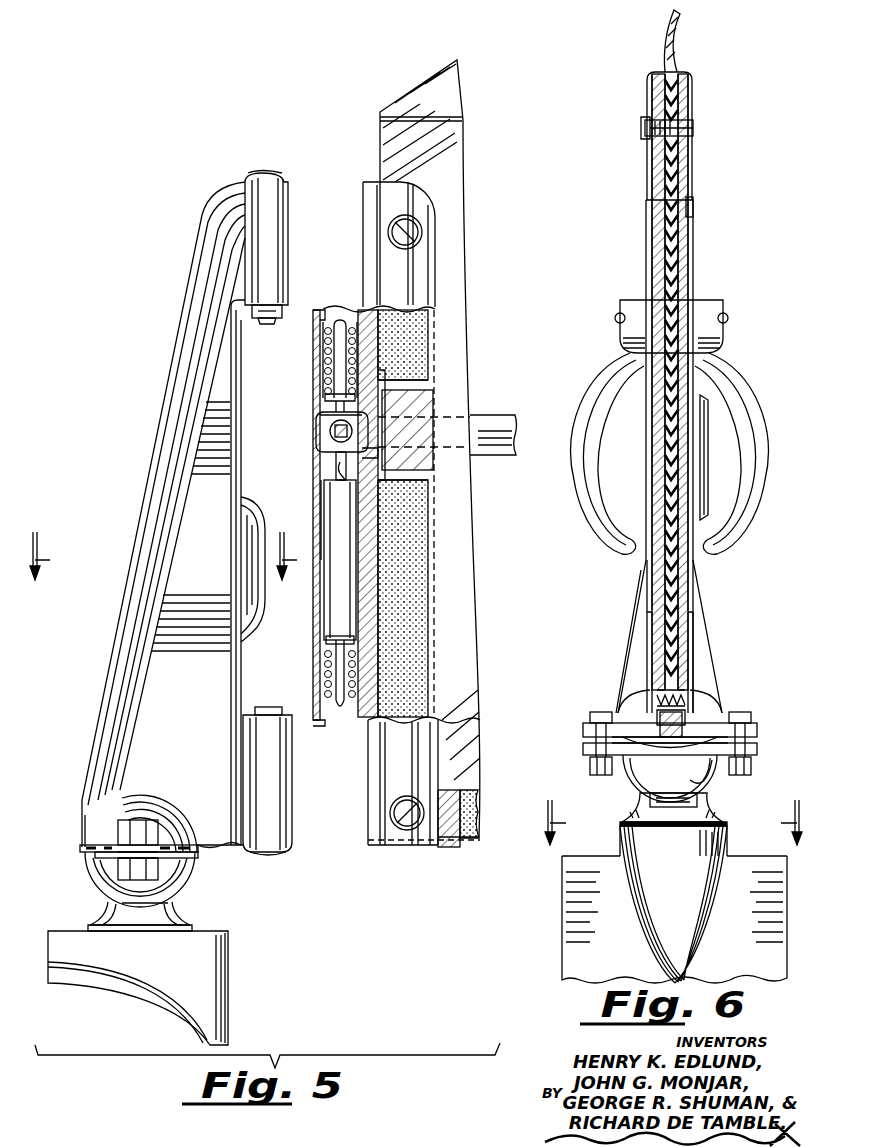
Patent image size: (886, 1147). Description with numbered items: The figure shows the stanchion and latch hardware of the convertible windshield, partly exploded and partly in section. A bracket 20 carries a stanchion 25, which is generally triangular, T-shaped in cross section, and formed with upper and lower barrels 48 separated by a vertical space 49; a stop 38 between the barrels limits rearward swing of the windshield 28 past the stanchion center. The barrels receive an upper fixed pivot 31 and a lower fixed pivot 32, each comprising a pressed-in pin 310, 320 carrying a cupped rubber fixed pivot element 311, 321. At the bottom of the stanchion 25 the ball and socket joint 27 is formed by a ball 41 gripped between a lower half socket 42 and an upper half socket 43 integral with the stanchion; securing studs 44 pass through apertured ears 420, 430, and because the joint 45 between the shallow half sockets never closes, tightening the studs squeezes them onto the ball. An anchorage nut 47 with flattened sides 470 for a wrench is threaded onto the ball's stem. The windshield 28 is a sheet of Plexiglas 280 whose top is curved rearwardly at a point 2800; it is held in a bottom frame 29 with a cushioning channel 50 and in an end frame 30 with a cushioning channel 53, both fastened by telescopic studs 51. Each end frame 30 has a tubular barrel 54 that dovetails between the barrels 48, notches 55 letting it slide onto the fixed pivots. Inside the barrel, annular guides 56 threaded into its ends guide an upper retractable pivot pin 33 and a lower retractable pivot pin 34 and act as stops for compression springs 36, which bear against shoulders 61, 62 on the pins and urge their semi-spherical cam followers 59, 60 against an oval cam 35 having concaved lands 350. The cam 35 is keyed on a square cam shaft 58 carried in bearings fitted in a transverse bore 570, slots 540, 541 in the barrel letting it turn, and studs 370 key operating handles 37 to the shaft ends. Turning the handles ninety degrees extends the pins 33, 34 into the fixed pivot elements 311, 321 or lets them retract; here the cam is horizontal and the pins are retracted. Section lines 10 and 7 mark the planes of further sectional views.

In FIG. 5, the bracket 20 is at (215, 1000).
In FIG. 6, the bracket 20 is at (563, 930).
In FIG. 5, the stanchion 25 is at (168, 440).
In FIG. 6, the stanchion 25 is at (712, 656).
In FIG. 5, the ball and socket joint 27 is at (95, 820).
In FIG. 6, the ball and socket joint 27 is at (706, 779).
In FIG. 5, the windshield 28 is at (500, 130).
In FIG. 6, the windshield 28 is at (700, 43).
In FIG. 5, the Plexiglas sheet 280 is at (465, 613).
In FIG. 6, the Plexiglas sheet 280 is at (686, 276).
In FIG. 6, the curve point 2800 is at (666, 22).
In FIG. 5, the bottom frame 29 is at (446, 849).
In FIG. 6, the bottom frame 29 is at (663, 688).
In FIG. 5, the end frame 30 is at (418, 196).
In FIG. 6, the end frame 30 is at (692, 632).
In FIG. 5, the upper fixed pivot 31 is at (286, 312).
In FIG. 5, the pin 310 is at (272, 176).
In FIG. 5, the cupped fixed pivot element 311 is at (262, 321).
In FIG. 5, the lower fixed pivot 32 is at (244, 716).
In FIG. 5, the pin 320 is at (274, 855).
In FIG. 5, the cupped fixed pivot element 321 is at (260, 709).
In FIG. 5, the upper retractable pivot pin 33 is at (338, 362).
In FIG. 5, the lower retractable pivot pin 34 is at (346, 569).
In FIG. 5, the cam 35 is at (328, 414).
In FIG. 5, the lands 350 is at (318, 432).
In FIG. 5, the compression springs 36 is at (324, 346).
In FIG. 5, the operating handles 37 is at (490, 422).
In FIG. 6, the operating handles 37 is at (760, 472).
In FIG. 6, the studs 370 is at (616, 320).
In FIG. 5, the stop 38 is at (250, 516).
In FIG. 6, the stop 38 is at (708, 450).
In FIG. 5, the ball 41 is at (122, 858).
In FIG. 6, the ball 41 is at (640, 746).
In FIG. 5, the lower half socket 42 is at (192, 886).
In FIG. 6, the lower half socket 42 is at (632, 778).
In FIG. 5, the apertured ears 420 is at (125, 862).
In FIG. 6, the apertured ears 420 is at (585, 750).
In FIG. 5, the upper half socket 43 is at (150, 803).
In FIG. 6, the upper half socket 43 is at (648, 700).
In FIG. 5, the apertured ears 430 is at (118, 836).
In FIG. 6, the apertured ears 430 is at (585, 732).
In FIG. 5, the securing studs 44 is at (155, 826).
In FIG. 6, the securing studs 44 is at (742, 712).
In FIG. 5, the joint 45 is at (197, 850).
In FIG. 6, the joint 45 is at (583, 745).
In FIG. 5, the anchorage nut 47 is at (147, 920).
In FIG. 6, the anchorage nut 47 is at (640, 812).
In FIG. 5, the flattened sides 470 is at (106, 908).
In FIG. 6, the flattened sides 470 is at (708, 801).
In FIG. 5, the upper and lower barrels 48 is at (292, 236).
In FIG. 6, the upper and lower barrels 48 is at (694, 174).
In FIG. 5, the vertical space 49 is at (231, 657).
In FIG. 5, the cushioning channel 50 is at (470, 840).
In FIG. 6, the cushioning channel 50 is at (690, 686).
In FIG. 5, the telescopic studs 51 is at (412, 230).
In FIG. 6, the telescopic studs 51 is at (695, 128).
In FIG. 6, the cushioning channel 53 is at (681, 234).
In FIG. 5, the tubular barrel 54 is at (316, 528).
In FIG. 6, the tubular barrel 54 is at (704, 300).
In FIG. 5, the slot 540 is at (388, 393).
In FIG. 5, the slot 541 is at (316, 428).
In FIG. 5, the notches 55 is at (322, 316).
In FIG. 6, the notches 55 is at (690, 210).
In FIG. 5, the annular guides 56 is at (373, 338).
In FIG. 5, the transverse bore 570 is at (377, 456).
In FIG. 5, the square cam shaft 58 is at (322, 444).
In FIG. 5, the cam follower 59 is at (334, 406).
In FIG. 5, the cam follower 60 is at (344, 458).
In FIG. 5, the shoulder 61 is at (378, 385).
In FIG. 5, the shoulder 62 is at (332, 638).
In FIG. 5, the section line 10 is at (157, 568).
In FIG. 6, the section line 7 is at (670, 834).